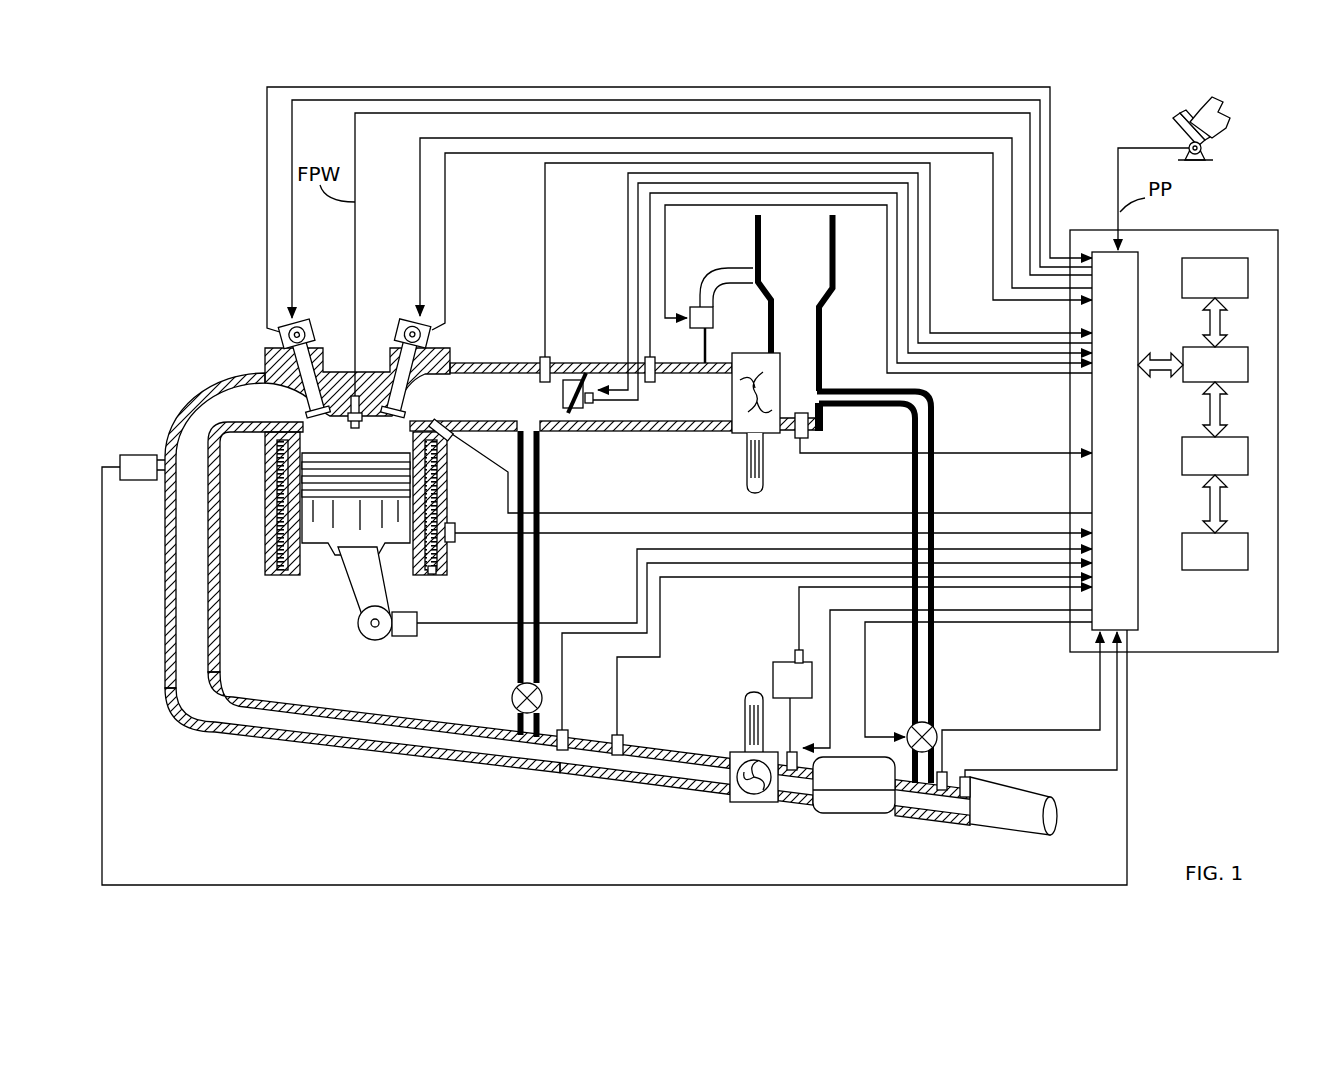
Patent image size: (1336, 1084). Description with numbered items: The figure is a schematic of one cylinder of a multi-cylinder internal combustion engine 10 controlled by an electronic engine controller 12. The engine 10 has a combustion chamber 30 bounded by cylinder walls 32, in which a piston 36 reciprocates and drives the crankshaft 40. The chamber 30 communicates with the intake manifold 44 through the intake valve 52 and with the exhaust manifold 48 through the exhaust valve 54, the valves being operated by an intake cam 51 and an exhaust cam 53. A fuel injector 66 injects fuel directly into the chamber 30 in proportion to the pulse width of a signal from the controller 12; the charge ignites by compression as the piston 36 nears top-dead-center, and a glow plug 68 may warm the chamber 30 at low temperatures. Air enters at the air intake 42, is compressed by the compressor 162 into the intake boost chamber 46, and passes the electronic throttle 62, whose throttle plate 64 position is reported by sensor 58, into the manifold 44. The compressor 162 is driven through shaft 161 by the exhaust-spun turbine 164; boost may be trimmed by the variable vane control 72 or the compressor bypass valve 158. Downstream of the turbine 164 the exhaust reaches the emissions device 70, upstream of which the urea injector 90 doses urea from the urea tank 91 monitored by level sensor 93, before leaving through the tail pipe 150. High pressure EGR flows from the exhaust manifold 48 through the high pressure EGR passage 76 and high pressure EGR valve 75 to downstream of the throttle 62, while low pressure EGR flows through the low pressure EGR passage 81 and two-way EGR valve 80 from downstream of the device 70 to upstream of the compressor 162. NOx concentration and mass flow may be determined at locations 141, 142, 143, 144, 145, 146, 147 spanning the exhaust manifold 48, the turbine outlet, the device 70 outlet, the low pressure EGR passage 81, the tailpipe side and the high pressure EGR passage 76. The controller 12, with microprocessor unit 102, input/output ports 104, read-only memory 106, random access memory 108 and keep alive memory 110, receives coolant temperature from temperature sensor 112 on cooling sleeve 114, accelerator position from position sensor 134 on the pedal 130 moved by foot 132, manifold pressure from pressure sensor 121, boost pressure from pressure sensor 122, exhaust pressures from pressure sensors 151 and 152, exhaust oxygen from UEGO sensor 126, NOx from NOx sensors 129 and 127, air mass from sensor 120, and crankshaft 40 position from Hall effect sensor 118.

The internal combustion engine 10 is at (205, 305).
The electronic engine controller 12 is at (1196, 427).
The combustion chamber 30 is at (282, 528).
The cylinder walls 32 is at (303, 580).
The piston 36 is at (340, 530).
The crankshaft 40 is at (362, 640).
The air intake 42 is at (795, 323).
The intake manifold 44 is at (525, 397).
The intake boost chamber 46 is at (666, 397).
The exhaust manifold 48 is at (234, 530).
The intake cam 51 is at (404, 302).
The intake valve 52 is at (400, 414).
The exhaust cam 53 is at (306, 305).
The exhaust valve 54 is at (312, 412).
The throttle position sensor 58 is at (598, 404).
The electronic throttle 62 is at (571, 376).
The throttle plate 64 is at (586, 372).
The fuel injector 66 is at (352, 398).
The glow plug 68 is at (448, 436).
The emissions device 70 is at (835, 812).
The variable vane control 72 is at (733, 790).
The high pressure EGR valve 75 is at (513, 690).
The high pressure EGR passage 76 is at (517, 637).
The EGR valve 80 is at (908, 732).
The low pressure EGR passage 81 is at (935, 650).
The urea injector 90 is at (795, 752).
The urea tank 91 is at (792, 681).
The level sensor 93 is at (795, 650).
The microprocessor unit 102 is at (1248, 357).
The input/output ports 104 is at (1140, 258).
The read-only memory 106 is at (1248, 272).
The random access memory 108 is at (1248, 453).
The keep alive memory 110 is at (1248, 546).
The temperature sensor 112 is at (450, 524).
The cooling sleeve 114 is at (440, 568).
The Hall effect sensor 118 is at (402, 638).
The air mass sensor 120 is at (808, 432).
The pressure sensor 121 is at (543, 360).
The pressure sensor 122 is at (670, 357).
The UEGO sensor 126 is at (118, 462).
The NOx sensor 127 is at (966, 777).
The NOx sensor 129 is at (615, 735).
The accelerator pedal 130 is at (1220, 130).
The foot 132 is at (1225, 112).
The position sensor 134 is at (1210, 150).
The location 141 is at (370, 737).
The location 142 is at (792, 798).
The location 143 is at (903, 797).
The location 144 is at (953, 802).
The location 145 is at (935, 690).
The location 146 is at (537, 560).
The location 147 is at (665, 758).
The tail pipe 150 is at (1010, 810).
The pressure sensor 151 is at (566, 730).
The pressure sensor 152 is at (942, 772).
The compressor bypass valve 158 is at (690, 307).
The shaft 161 is at (747, 480).
The compressor 162 is at (735, 433).
The turbine 164 is at (738, 760).